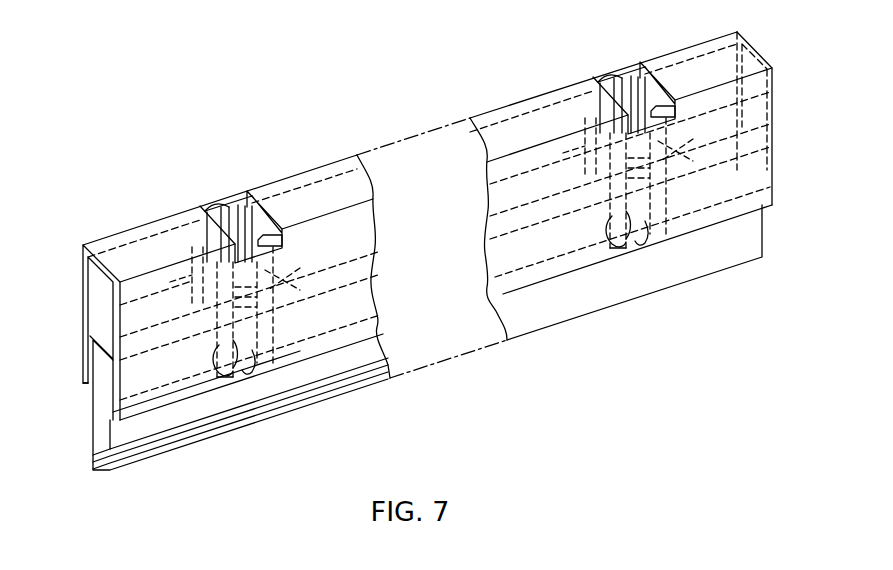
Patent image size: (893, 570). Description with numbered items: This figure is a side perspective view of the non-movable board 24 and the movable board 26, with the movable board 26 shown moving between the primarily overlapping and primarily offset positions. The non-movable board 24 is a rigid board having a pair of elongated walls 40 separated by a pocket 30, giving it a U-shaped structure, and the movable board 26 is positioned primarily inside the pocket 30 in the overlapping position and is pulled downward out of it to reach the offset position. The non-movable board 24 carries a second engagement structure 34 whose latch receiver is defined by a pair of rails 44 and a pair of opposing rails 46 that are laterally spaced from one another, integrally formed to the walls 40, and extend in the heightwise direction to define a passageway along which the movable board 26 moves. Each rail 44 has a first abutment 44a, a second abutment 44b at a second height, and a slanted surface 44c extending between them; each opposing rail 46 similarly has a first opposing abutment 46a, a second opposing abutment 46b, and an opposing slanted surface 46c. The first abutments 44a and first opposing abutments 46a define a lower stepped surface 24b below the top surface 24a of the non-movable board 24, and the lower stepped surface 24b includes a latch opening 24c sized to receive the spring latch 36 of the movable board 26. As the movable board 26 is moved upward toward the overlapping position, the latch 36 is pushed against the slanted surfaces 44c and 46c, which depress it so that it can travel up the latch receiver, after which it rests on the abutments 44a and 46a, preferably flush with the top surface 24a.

The non-movable board 24 is at (114, 228).
The top surface 24a is at (323, 194).
The lower stepped surface 24b is at (262, 252).
The latch opening 24c is at (229, 213).
The movable board 26 is at (98, 409).
The pocket 30 is at (106, 306).
The second engagement structure 34 is at (194, 181).
The spring latch 36 is at (231, 273).
The elongated walls 40 is at (87, 384).
The rails 44 is at (190, 285).
The first abutments 44a is at (204, 220).
The second abutments 44b is at (245, 372).
The slanted surfaces 44c is at (218, 352).
The opposing rails 46 is at (268, 273).
The first opposing abutments 46a is at (265, 236).
The second opposing abutments 46b is at (253, 372).
The opposing slanted surfaces 46c is at (265, 322).